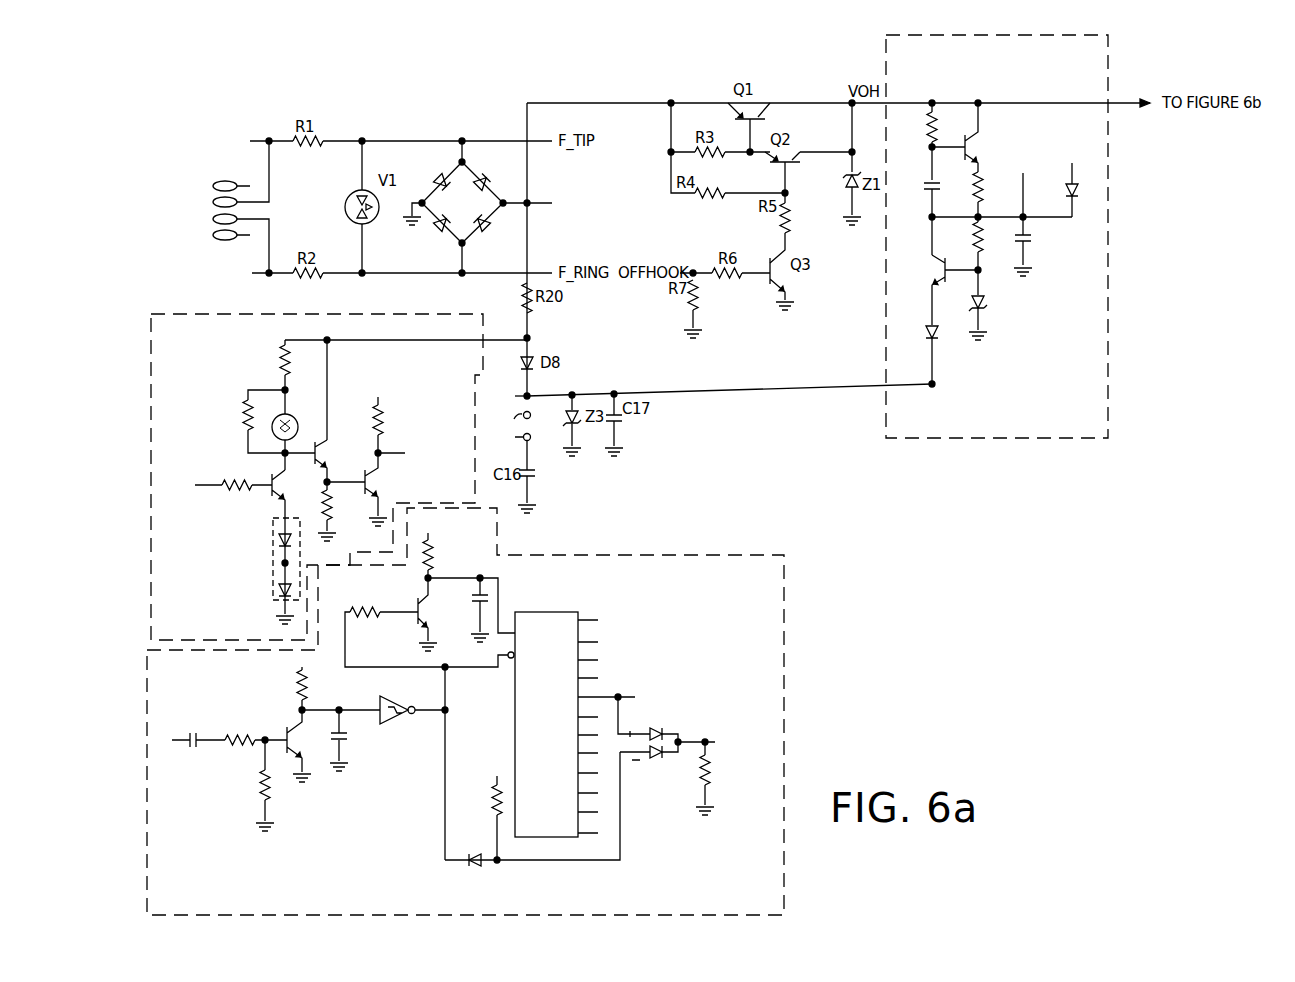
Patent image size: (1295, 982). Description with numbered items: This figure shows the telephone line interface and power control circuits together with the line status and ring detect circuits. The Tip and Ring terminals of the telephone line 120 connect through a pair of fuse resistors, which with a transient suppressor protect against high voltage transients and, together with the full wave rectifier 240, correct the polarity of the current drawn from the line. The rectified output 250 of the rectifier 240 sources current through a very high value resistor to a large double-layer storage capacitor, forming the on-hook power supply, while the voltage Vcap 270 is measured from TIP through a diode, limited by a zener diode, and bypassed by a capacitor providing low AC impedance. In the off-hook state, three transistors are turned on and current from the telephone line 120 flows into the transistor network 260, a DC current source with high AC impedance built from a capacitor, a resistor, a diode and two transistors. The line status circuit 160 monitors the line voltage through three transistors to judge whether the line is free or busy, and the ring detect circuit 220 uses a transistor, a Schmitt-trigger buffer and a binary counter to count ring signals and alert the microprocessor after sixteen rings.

The telephone line 120 is at (222, 178).
The line status circuit 160 is at (306, 452).
The full wave rectifier 240 is at (454, 187).
The rectified output 250 is at (534, 156).
The transistor network 260 is at (954, 235).
The Vcap 270 is at (706, 386).
The ring detect circuit 220 is at (520, 711).